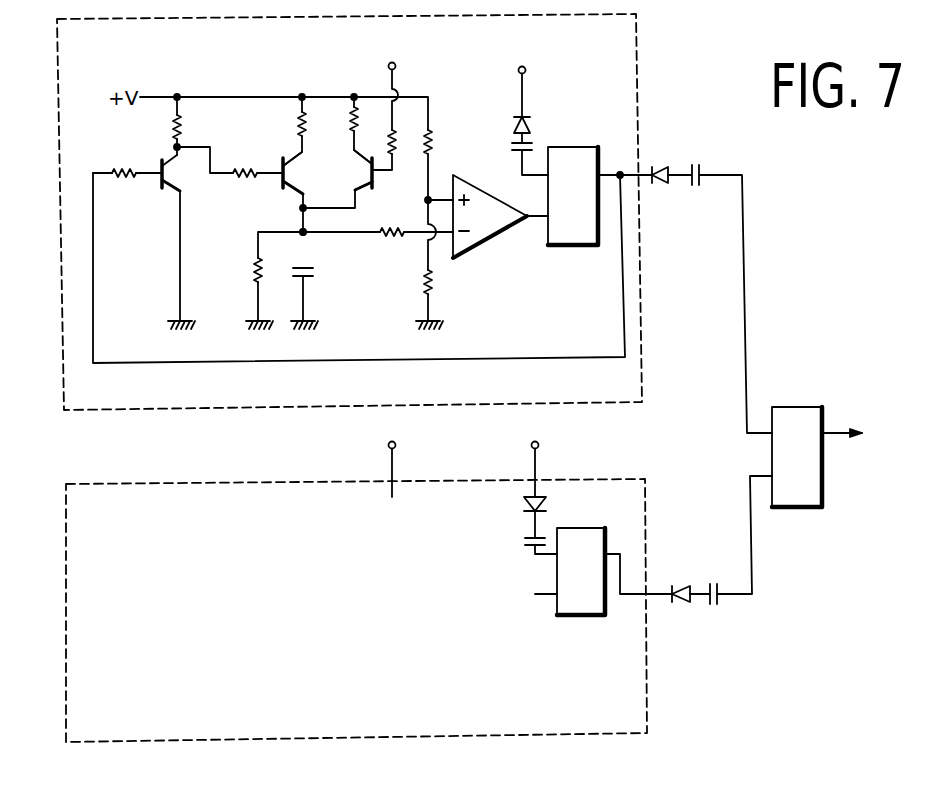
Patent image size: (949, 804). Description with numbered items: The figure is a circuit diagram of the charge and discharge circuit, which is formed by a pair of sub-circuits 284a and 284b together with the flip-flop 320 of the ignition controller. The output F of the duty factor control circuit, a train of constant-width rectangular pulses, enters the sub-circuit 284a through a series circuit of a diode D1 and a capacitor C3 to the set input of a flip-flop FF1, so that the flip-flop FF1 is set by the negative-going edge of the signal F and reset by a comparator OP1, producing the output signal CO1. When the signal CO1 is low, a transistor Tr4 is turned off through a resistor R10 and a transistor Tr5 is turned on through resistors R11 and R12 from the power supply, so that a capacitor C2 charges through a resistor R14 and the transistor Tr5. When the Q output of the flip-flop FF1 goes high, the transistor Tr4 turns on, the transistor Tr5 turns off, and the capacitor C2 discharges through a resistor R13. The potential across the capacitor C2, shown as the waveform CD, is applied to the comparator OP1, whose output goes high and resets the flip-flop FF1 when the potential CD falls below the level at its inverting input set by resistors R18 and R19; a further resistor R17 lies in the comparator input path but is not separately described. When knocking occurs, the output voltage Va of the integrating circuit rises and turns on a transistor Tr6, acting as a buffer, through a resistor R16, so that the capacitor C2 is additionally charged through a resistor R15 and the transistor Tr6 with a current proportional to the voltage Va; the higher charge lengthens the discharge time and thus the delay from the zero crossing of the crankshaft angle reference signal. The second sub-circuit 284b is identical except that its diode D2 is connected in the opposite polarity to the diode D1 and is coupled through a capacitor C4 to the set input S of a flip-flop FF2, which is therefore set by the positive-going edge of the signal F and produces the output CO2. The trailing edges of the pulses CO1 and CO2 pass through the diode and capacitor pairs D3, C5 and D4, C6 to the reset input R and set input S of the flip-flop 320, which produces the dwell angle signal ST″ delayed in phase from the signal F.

The sub-circuit 284a is at (637, 47).
The second sub-circuit 284b is at (646, 506).
The flip-flop 320 is at (803, 407).
The resistor R10 is at (131, 163).
The resistor R11 is at (198, 128).
The resistor R12 is at (250, 186).
The resistor R13 is at (240, 270).
The resistor R14 is at (322, 125).
The resistor R15 is at (374, 119).
The resistor R16 is at (376, 143).
The resistor R17 is at (399, 221).
The resistor R18 is at (449, 143).
The resistor R19 is at (411, 283).
The transistor Tr4 is at (158, 186).
The transistor Tr5 is at (290, 154).
The transistor Tr6 is at (370, 173).
The capacitor C2 is at (317, 276).
The capacitor C3 is at (519, 158).
The capacitor C4 is at (528, 534).
The capacitor C5 is at (720, 288).
The capacitor C6 is at (731, 540).
The diode D1 is at (537, 129).
The diode D2 is at (550, 507).
The diode D3 is at (663, 163).
The diode D4 is at (685, 582).
The comparator OP1 is at (490, 245).
The flip-flop FF1 is at (573, 213).
The flip-flop FF2 is at (570, 593).
The capacitor voltage waveform CD is at (307, 235).
The output signal CO1 is at (619, 170).
The output pulse CO2 is at (628, 585).
The output voltage of the integrating circuit Va is at (392, 268).
The duty factor control circuit output signal F is at (537, 279).